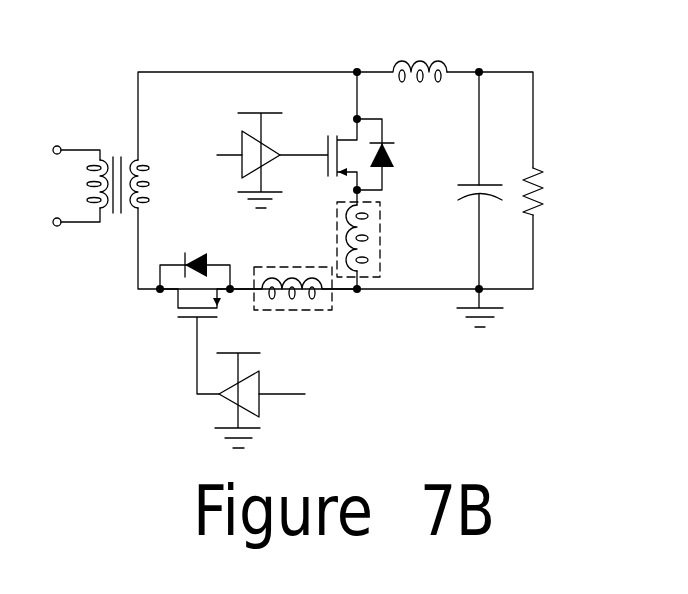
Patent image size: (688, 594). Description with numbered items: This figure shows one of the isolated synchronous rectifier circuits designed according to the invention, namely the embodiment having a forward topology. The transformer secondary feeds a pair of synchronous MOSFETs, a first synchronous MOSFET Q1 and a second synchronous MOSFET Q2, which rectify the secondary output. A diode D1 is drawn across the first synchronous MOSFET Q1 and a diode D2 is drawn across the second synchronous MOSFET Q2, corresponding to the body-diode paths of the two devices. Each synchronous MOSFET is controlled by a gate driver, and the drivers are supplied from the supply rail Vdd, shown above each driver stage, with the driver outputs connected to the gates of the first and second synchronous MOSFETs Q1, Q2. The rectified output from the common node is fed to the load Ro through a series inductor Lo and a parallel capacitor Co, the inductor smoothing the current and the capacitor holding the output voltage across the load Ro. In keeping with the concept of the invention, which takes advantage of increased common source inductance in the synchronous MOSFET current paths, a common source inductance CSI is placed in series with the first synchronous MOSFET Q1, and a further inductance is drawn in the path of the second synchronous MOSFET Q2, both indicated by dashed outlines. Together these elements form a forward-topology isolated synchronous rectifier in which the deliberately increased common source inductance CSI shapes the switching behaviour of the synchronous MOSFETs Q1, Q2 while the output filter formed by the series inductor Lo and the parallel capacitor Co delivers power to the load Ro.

The synchronous MOSFET Q1 is at (181, 341).
The synchronous MOSFET Q2 is at (318, 148).
The first diode D1 is at (195, 257).
The second diode D2 is at (393, 154).
The series inductor Lo is at (402, 58).
The parallel capacitor Co is at (472, 179).
The load Ro is at (549, 191).
The common source inductance CSI is at (293, 276).
The supply voltage for gate drivers Vdd is at (260, 268).